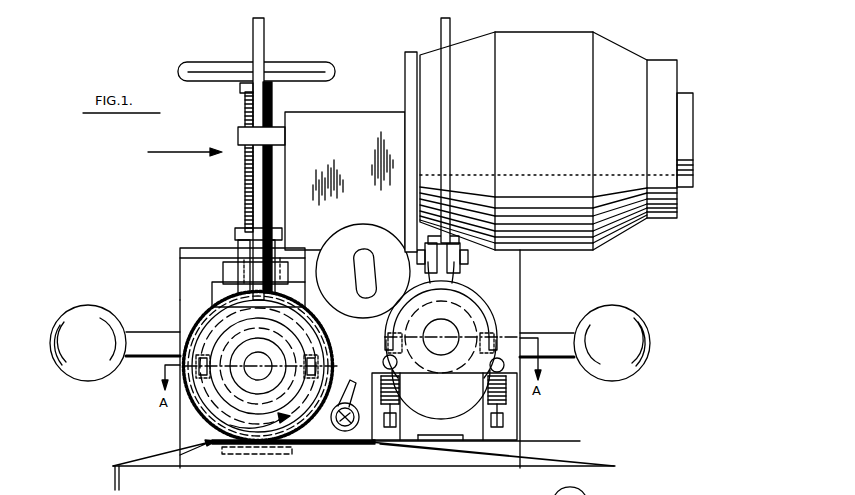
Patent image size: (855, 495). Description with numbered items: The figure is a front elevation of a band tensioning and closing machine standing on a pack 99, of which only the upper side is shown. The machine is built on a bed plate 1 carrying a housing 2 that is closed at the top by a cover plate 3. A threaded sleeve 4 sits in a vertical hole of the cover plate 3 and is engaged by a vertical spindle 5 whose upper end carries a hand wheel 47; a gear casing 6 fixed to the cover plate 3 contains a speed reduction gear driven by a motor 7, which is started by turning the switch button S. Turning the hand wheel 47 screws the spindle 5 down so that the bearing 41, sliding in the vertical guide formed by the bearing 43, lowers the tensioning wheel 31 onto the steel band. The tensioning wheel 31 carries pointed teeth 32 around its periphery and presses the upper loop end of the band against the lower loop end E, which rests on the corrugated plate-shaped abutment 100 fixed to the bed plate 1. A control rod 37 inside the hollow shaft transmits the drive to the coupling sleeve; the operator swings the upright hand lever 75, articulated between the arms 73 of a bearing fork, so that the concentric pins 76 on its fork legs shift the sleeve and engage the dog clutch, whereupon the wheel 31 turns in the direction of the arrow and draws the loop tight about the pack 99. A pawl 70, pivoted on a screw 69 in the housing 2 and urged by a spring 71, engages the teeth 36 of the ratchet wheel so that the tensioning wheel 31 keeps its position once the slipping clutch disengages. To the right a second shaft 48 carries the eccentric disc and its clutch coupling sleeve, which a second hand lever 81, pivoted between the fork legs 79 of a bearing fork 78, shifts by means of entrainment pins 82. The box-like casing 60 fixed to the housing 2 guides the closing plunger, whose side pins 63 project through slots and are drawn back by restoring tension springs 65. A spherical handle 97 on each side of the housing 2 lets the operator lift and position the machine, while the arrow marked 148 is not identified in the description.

The bed plate 1 is at (384, 450).
The housing 2 is at (182, 279).
The cover plate 3 is at (182, 254).
The threaded sleeve 4 is at (240, 237).
The vertical spindle 5 is at (246, 194).
The gear casing 6 is at (353, 121).
The motor 7 is at (556, 141).
The tensioning wheel 31 is at (193, 322).
The pointed teeth 32 is at (205, 423).
The teeth 36 is at (328, 360).
The control rod 37 is at (268, 363).
The bearing 41 is at (222, 294).
The bearing 43 is at (226, 268).
The hand wheel 47 is at (210, 70).
The shaft 48 is at (448, 328).
The box-like casing 60 is at (505, 432).
The pins 63 is at (503, 418).
The restoring tension springs 65 is at (492, 394).
The screw 69 is at (345, 432).
The pawl 70 is at (338, 421).
The spring 71 is at (355, 389).
The arms 73 is at (250, 248).
The hand lever 75 is at (261, 50).
The concentric pins 76 is at (205, 380).
The bearing fork 78 is at (462, 270).
The fork legs 79 is at (445, 240).
The hand lever 81 is at (442, 29).
The entrainment pins 82 is at (500, 342).
The spherical handle 97 is at (90, 310).
The pack 99 is at (612, 468).
The plate-shaped abutment 100 is at (245, 453).
The direction arrow 148 is at (185, 145).
The lower loop end E is at (212, 446).
The switch button S is at (360, 262).